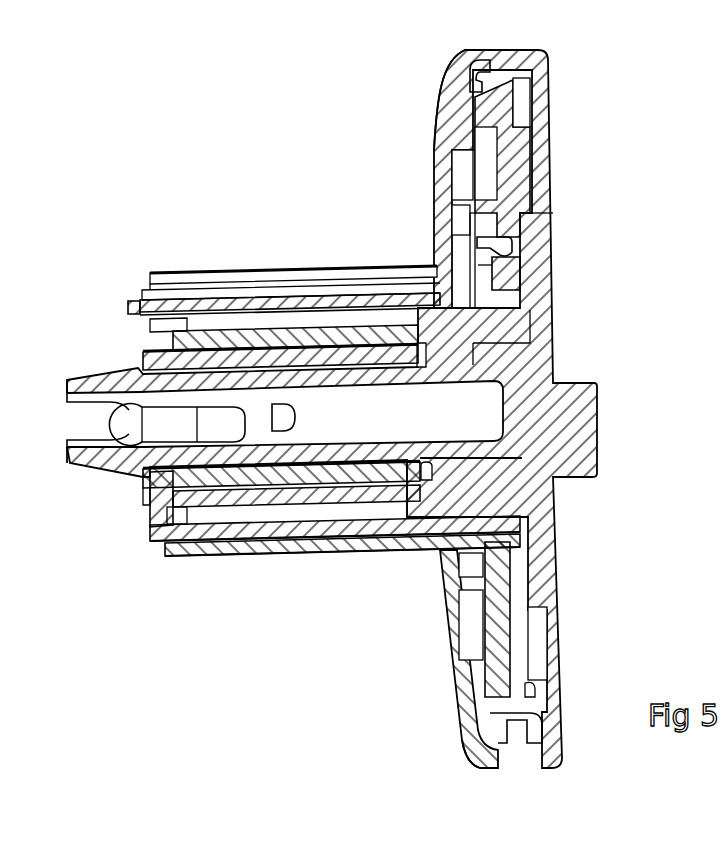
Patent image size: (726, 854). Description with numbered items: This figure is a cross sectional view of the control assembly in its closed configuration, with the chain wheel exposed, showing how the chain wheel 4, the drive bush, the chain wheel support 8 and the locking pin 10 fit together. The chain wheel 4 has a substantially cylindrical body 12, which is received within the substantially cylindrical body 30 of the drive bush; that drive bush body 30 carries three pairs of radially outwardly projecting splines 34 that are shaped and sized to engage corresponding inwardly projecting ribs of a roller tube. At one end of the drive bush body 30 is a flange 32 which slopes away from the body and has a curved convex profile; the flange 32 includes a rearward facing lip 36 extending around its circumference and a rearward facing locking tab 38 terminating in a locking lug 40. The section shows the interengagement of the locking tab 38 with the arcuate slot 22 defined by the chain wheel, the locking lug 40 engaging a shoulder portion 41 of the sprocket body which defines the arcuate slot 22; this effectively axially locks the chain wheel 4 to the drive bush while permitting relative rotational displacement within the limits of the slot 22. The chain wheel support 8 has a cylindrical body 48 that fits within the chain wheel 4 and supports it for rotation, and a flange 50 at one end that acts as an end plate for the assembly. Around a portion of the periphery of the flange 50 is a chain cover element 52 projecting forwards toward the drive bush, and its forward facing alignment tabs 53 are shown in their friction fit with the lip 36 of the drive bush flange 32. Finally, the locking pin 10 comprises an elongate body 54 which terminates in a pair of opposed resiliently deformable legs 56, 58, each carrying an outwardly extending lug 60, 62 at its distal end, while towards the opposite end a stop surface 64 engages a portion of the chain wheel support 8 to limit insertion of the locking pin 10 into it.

The chain wheel 4 is at (505, 170).
The chain wheel support 8 is at (529, 496).
The locking pin 10 is at (575, 415).
The cylindrical body 12 is at (323, 533).
The arcuate slot 22 is at (500, 268).
The cylindrical body 30 is at (322, 308).
The flange 32 is at (455, 716).
The splines 34 is at (180, 272).
The lip 36 is at (458, 60).
The locking tab 38 is at (480, 243).
The locking lug 40 is at (505, 248).
The shoulder portion 41 is at (437, 268).
The cylindrical body 48 is at (240, 337).
The flange 50 is at (545, 196).
The chain cover element 52 is at (533, 57).
The alignment tabs 53 is at (483, 65).
The elongate body 54 is at (400, 523).
The leg 56 is at (172, 381).
The leg 58 is at (152, 482).
The lug 60 is at (86, 380).
The lug 62 is at (98, 462).
The stop surface 64 is at (552, 334).